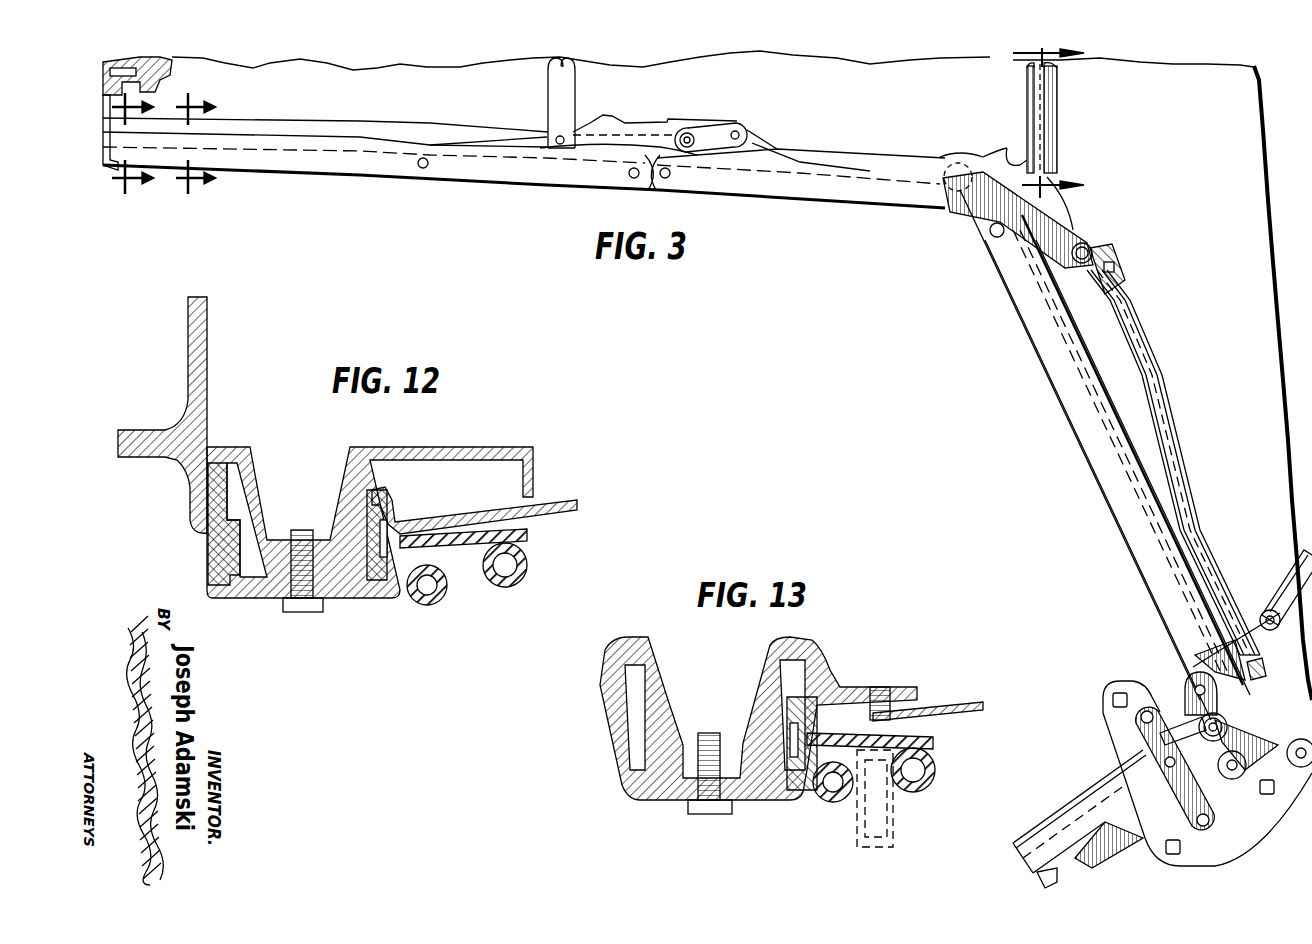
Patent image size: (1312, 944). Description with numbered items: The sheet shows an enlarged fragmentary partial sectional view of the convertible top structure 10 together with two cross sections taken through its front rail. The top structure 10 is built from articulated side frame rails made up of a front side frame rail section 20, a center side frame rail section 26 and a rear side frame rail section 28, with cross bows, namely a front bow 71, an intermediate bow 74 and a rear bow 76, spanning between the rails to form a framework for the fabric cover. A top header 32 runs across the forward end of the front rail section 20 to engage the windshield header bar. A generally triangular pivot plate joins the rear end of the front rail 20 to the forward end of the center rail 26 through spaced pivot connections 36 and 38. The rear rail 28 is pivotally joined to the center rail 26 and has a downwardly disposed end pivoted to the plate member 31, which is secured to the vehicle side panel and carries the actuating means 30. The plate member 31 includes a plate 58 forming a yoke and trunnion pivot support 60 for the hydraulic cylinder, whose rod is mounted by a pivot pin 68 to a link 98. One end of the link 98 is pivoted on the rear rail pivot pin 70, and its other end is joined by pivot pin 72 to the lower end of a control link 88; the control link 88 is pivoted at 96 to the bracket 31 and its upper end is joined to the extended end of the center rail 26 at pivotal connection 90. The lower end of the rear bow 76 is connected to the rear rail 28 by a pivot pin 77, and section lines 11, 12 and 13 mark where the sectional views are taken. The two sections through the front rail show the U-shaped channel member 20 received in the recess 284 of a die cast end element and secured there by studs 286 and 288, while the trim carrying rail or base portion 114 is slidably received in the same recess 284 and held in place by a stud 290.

In FIG. 3, the top structure 10 is at (822, 234).
In FIG. 3, the section line 11- 11 is at (1038, 120).
In FIG. 3, the section line 12- 12 is at (142, 150).
In FIG. 3, the section line 13- 13 is at (205, 150).
In FIG. 3, the front side frame rail section 20 is at (275, 167).
In FIG. 12, the front side frame rail section 20 is at (224, 599).
In FIG. 13, the front side frame rail section 20 is at (620, 780).
In FIG. 3, the center side frame rail section 26 is at (770, 194).
In FIG. 3, the rear side frame rail section 28 is at (1097, 435).
In FIG. 3, the actuating means 30 is at (1079, 788).
In FIG. 3, the plate member 31 is at (1245, 812).
In FIG. 3, the top header 32 is at (203, 58).
In FIG. 3, the pivot connection 36 is at (632, 178).
In FIG. 3, the pivot connection 38 is at (668, 178).
In FIG. 3, the plate 58 is at (1146, 723).
In FIG. 3, the yoke and trunnion pivot support 60 is at (1210, 725).
In FIG. 3, the pivot pin 68 is at (1199, 715).
In FIG. 3, the rear rail pivot pin 70 is at (1187, 665).
In FIG. 3, the front bow 71 is at (555, 113).
In FIG. 3, the pivot pin 72 is at (1240, 775).
In FIG. 3, the intermediate bow 74 is at (1028, 116).
In FIG. 3, the rear bow 76 is at (1297, 572).
In FIG. 3, the pivot pin 77 is at (1266, 610).
In FIG. 3, the control link 88 is at (1150, 378).
In FIG. 3, the pivotal connection 90 is at (1088, 246).
In FIG. 3, the pivotal connection 96 is at (1303, 768).
In FIG. 3, the link 98 is at (1193, 688).
In FIG. 12, the base portion 114 is at (500, 482).
In FIG. 13, the base portion 114 is at (950, 708).
In FIG. 12, the recess 284 is at (360, 572).
In FIG. 13, the recess 284 is at (767, 772).
In FIG. 13, the stud 286 is at (707, 817).
In FIG. 12, the stud 288 is at (305, 613).
In FIG. 13, the stud 290 is at (878, 688).